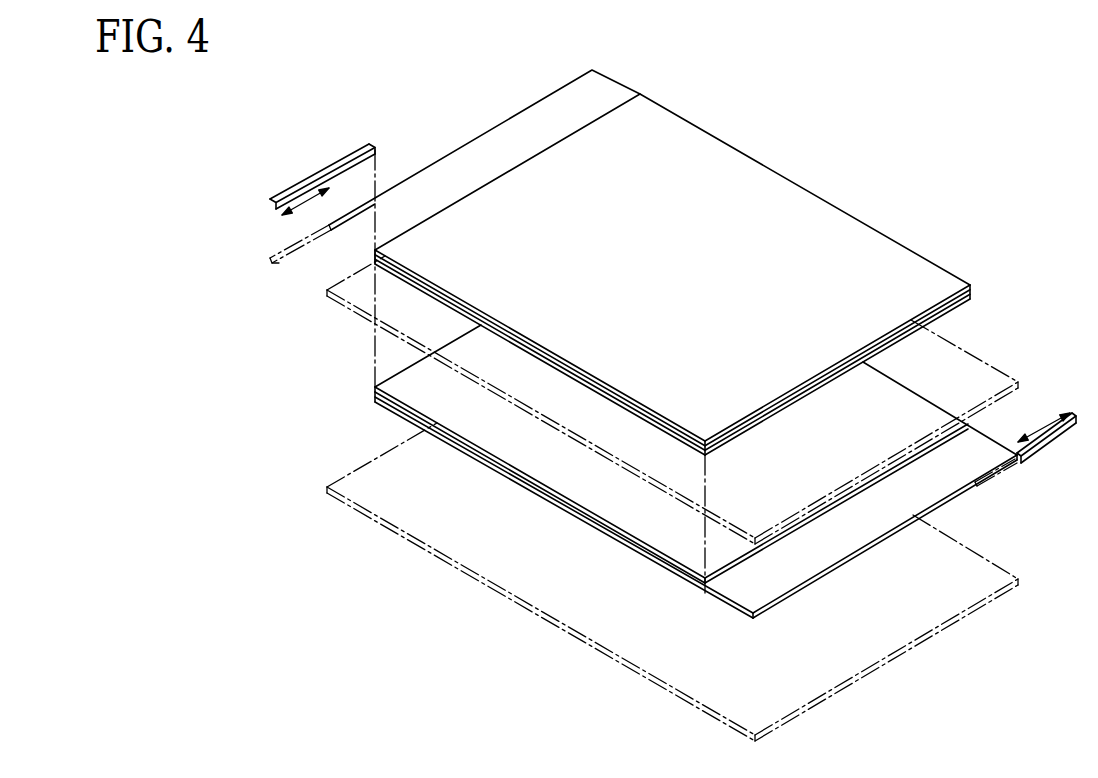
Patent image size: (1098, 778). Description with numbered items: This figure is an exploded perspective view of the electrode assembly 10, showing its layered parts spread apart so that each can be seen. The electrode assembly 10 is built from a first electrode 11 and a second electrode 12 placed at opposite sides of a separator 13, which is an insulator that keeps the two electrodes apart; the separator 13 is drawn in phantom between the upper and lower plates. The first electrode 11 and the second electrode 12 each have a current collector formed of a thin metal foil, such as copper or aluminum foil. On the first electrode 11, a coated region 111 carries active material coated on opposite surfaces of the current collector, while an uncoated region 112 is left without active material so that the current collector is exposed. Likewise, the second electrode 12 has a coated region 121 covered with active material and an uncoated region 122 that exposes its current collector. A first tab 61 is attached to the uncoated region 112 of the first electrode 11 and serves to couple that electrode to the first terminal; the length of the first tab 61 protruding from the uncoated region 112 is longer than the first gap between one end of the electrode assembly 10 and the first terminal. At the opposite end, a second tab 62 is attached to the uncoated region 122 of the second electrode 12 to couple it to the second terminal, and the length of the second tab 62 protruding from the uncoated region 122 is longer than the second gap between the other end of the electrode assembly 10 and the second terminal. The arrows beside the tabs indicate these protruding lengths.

The electrode assembly 10 is at (510, 50).
The first electrode 11 is at (690, 43).
The coated region 111 is at (638, 123).
The uncoated region 112 is at (602, 95).
The second electrode 12 is at (492, 649).
The coated region 121 is at (667, 525).
The uncoated region 122 is at (753, 578).
The separator 13 is at (367, 463).
The first tab 61 is at (323, 172).
The second tab 62 is at (1050, 437).